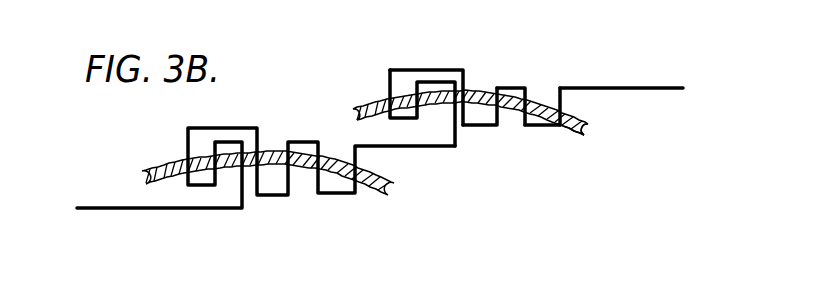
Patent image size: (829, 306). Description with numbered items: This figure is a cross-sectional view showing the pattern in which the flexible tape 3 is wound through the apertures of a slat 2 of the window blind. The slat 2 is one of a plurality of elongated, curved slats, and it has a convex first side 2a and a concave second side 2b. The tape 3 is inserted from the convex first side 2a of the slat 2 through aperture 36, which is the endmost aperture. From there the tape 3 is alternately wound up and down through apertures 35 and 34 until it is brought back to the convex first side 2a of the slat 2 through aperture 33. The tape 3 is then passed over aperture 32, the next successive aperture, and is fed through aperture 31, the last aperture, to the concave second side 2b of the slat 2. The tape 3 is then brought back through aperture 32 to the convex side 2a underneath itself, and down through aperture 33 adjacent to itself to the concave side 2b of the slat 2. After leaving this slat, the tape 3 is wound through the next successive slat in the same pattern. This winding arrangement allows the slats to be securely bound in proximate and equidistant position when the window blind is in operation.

The slat 2 is at (360, 101).
The convex first side 2a is at (587, 120).
The concave second side 2b is at (578, 136).
The flexible tape 3 is at (677, 87).
The aperture 31 is at (381, 84).
The aperture 32 is at (425, 69).
The aperture 33 is at (463, 69).
The aperture 34 is at (490, 87).
The aperture 35 is at (527, 92).
The aperture 36 is at (550, 100).